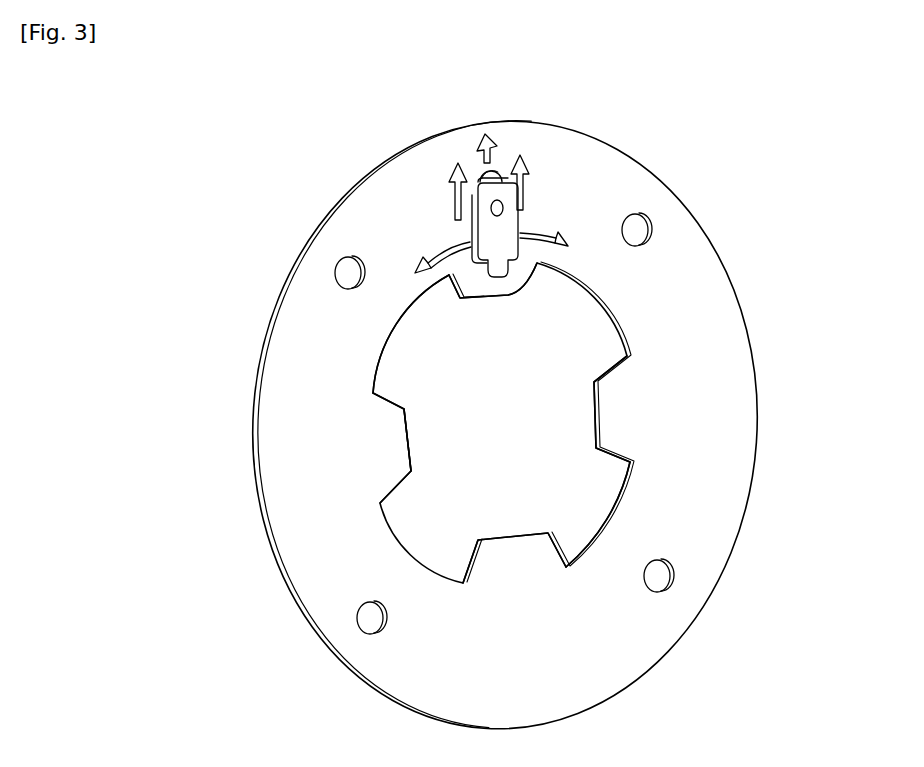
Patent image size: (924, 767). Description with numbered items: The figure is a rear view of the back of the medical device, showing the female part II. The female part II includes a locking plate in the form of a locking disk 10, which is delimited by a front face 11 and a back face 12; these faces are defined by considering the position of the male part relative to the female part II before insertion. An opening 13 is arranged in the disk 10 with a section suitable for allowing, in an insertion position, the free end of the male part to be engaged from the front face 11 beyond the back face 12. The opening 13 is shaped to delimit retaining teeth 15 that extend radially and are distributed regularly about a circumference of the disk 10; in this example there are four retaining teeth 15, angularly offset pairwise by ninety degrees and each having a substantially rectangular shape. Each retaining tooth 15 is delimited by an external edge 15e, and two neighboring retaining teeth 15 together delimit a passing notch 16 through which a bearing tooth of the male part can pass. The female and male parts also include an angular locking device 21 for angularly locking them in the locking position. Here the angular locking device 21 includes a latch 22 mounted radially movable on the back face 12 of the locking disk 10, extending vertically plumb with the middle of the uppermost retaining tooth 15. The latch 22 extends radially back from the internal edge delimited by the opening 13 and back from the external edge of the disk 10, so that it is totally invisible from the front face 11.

The locking disk 10 is at (607, 167).
The front face 11 is at (302, 198).
The back face 12 is at (387, 200).
The opening 13 is at (518, 421).
The retaining teeth 15 is at (497, 293).
The external edge 15e is at (430, 456).
The passing notch 16 is at (402, 328).
The angular locking device 21 is at (502, 163).
The latch 22 is at (508, 222).
The female part II is at (722, 250).